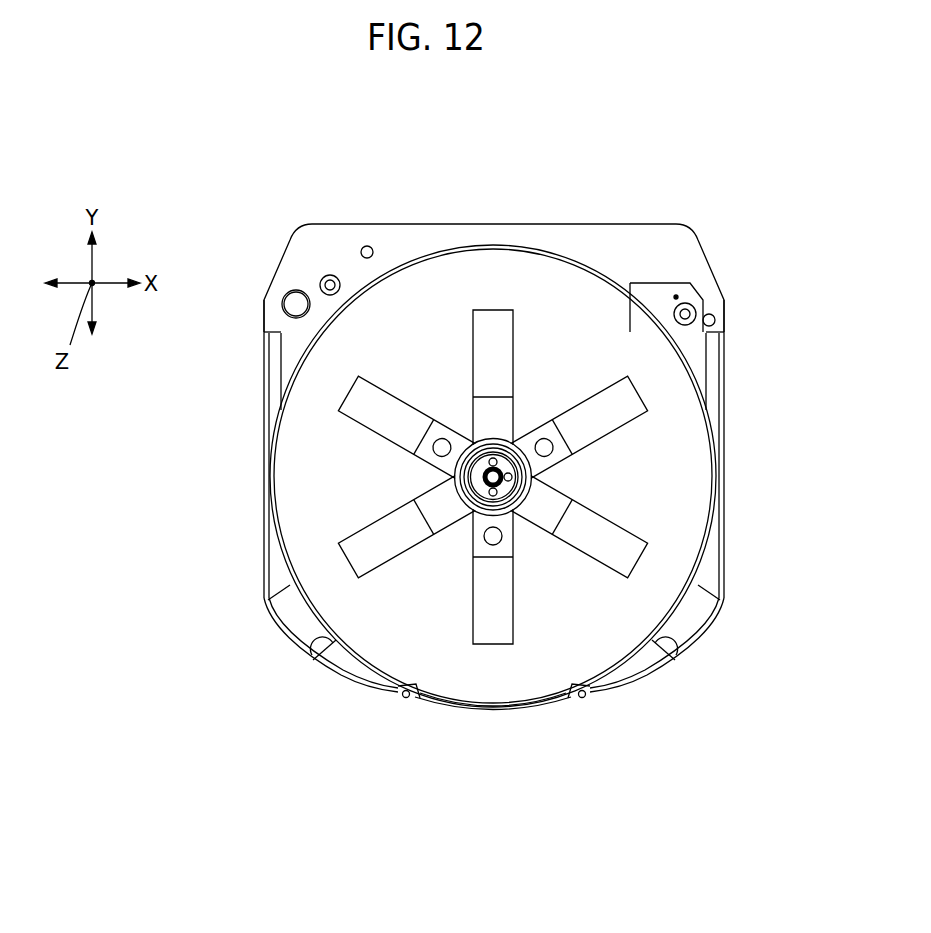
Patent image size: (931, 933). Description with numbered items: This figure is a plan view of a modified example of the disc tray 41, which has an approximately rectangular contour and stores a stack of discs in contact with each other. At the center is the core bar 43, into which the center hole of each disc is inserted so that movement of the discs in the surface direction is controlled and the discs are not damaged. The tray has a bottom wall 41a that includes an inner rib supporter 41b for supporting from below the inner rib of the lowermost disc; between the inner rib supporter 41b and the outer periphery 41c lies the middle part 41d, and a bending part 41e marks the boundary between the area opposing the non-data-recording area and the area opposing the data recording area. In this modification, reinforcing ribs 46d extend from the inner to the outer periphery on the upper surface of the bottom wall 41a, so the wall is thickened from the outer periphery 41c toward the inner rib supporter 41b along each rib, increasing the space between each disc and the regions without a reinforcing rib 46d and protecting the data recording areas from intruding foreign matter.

The disc tray 41 is at (622, 243).
The bottom wall 41a is at (612, 336).
The inner rib supporter 41b is at (477, 440).
The outer periphery 41c is at (695, 452).
The middle part 41d is at (582, 431).
The bending part 41e is at (427, 513).
The core bar 43 is at (445, 480).
The reinforcing rib 46d is at (565, 430).